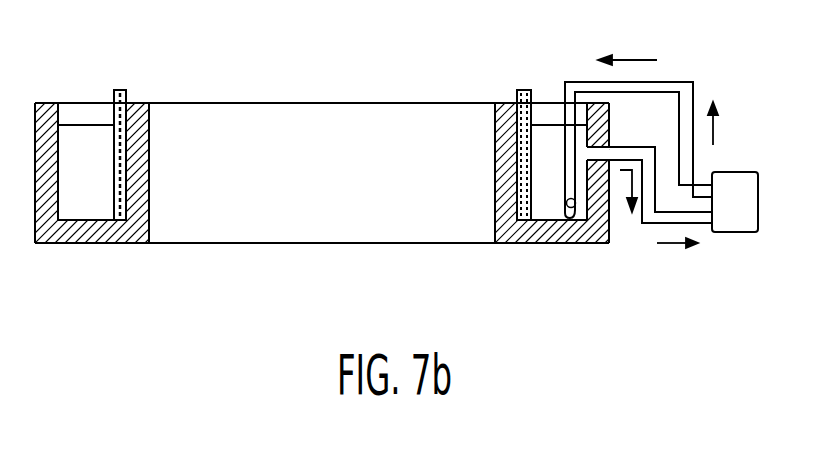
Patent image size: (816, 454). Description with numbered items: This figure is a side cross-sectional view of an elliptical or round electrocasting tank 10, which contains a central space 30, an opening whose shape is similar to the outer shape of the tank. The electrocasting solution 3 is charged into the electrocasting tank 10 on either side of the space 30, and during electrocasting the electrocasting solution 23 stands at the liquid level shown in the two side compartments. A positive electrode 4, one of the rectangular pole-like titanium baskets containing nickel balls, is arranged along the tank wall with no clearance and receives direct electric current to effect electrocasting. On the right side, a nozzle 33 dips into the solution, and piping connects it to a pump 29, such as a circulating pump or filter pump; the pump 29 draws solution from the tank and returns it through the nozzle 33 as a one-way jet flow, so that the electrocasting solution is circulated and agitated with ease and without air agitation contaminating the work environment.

The electrocasting tank 10 is at (47, 243).
The electrocasting solution 3 is at (86, 210).
The electrocasting solution 23 is at (80, 125).
The positive electrode 4 is at (120, 90).
The space 30 is at (333, 135).
The pump 29 is at (745, 178).
The nozzle 33 is at (563, 215).